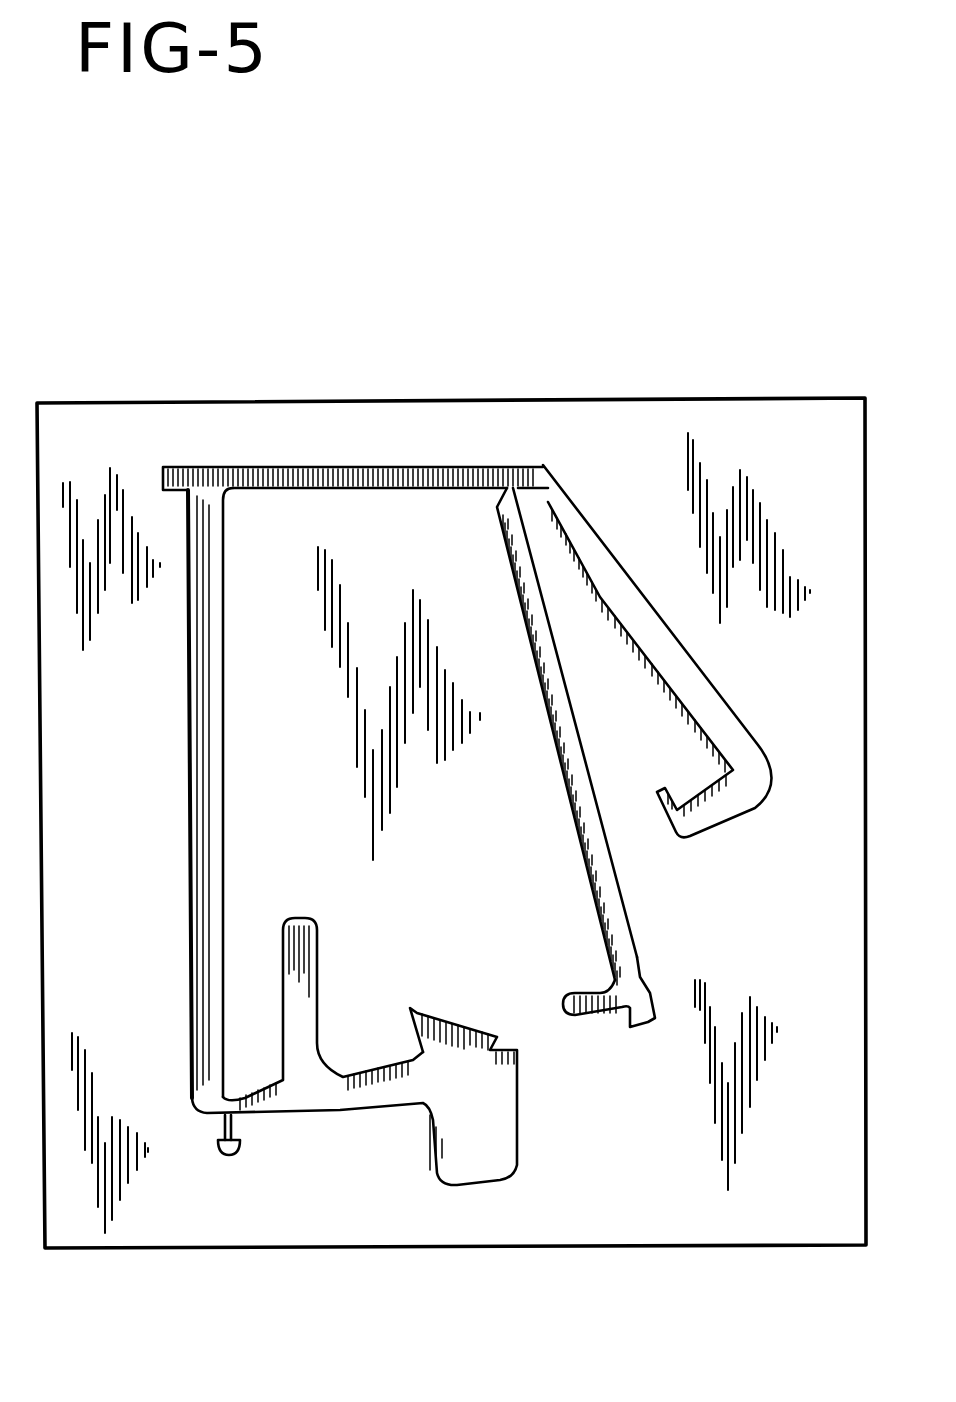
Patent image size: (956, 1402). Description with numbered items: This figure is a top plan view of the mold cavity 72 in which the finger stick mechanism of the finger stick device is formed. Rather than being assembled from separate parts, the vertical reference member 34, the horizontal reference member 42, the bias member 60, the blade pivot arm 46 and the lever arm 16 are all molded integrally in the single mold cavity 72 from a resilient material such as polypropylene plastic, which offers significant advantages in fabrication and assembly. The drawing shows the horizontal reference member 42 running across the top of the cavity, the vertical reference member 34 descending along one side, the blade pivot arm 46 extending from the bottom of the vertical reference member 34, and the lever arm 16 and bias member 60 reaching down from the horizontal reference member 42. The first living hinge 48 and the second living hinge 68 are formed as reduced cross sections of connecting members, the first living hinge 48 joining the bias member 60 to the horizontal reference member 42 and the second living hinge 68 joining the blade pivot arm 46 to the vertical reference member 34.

The mold cavity 72 is at (94, 403).
The horizontal reference member 42 is at (293, 482).
The vertical reference member 34 is at (222, 540).
The blade pivot arm 46 is at (363, 1094).
The first living hinge 48 is at (217, 1112).
The second living hinge 68 is at (508, 486).
The bias member 60 is at (640, 952).
The lever arm 16 is at (612, 568).